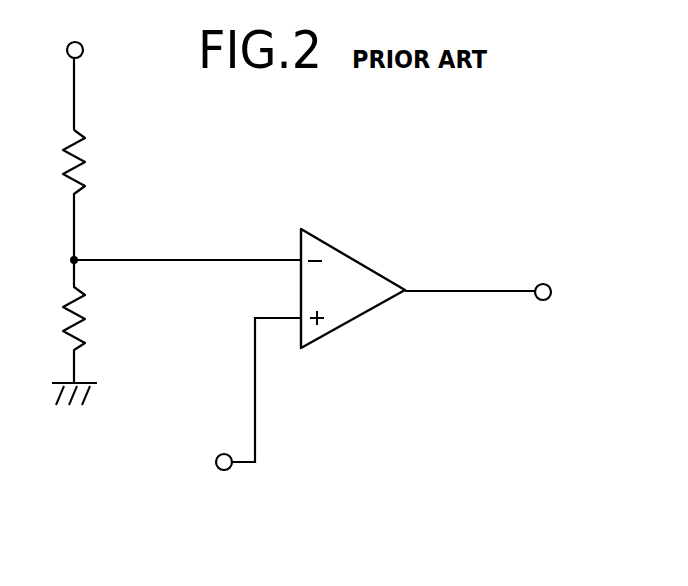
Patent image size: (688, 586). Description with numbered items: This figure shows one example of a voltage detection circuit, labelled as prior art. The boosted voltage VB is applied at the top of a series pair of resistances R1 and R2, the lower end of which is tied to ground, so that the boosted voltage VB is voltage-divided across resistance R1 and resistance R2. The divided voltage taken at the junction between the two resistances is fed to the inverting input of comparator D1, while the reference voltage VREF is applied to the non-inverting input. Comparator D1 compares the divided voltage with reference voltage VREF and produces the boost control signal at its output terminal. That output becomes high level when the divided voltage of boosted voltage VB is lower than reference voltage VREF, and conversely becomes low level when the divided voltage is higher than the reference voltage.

The boosted voltage VB is at (79, 68).
The resistance R1 is at (78, 178).
The resistance R2 is at (78, 300).
The comparator D1 is at (358, 260).
The reference voltage VREF is at (222, 395).